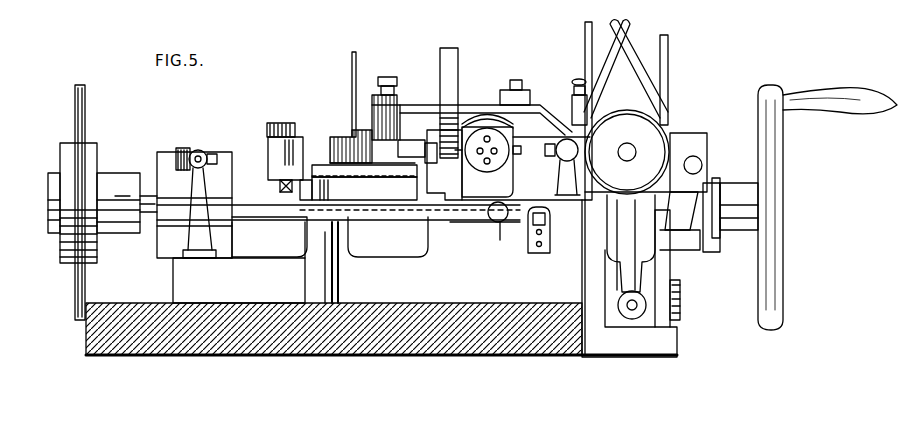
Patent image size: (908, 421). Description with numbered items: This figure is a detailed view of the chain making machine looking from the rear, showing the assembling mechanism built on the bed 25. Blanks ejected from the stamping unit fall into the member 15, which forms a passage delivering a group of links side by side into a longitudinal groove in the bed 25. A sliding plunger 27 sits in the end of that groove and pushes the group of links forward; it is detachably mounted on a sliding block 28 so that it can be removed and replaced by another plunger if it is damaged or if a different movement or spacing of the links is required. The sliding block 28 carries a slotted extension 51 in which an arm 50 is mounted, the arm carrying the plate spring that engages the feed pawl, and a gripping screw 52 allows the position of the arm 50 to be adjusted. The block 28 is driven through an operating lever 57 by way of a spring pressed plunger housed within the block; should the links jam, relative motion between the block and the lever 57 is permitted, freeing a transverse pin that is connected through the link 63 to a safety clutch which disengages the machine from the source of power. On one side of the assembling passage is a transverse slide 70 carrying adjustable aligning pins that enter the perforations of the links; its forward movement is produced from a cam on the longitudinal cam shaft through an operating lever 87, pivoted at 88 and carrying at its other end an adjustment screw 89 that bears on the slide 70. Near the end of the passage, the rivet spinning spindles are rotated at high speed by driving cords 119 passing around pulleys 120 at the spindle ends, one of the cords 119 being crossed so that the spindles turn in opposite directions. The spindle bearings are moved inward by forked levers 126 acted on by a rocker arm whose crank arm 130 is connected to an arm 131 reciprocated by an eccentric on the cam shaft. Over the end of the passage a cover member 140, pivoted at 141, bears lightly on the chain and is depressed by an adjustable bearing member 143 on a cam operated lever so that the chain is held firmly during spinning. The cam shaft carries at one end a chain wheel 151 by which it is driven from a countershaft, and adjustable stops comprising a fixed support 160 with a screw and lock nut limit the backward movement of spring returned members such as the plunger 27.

The passage member 15 is at (450, 58).
The bed 25 is at (444, 165).
The sliding plunger 27 is at (418, 150).
The sliding block 28 is at (352, 160).
The arm 50 is at (473, 108).
The slotted extension 51 is at (394, 118).
The gripping screw 52 is at (387, 77).
The operating lever 57 is at (279, 160).
The link 63 is at (352, 62).
The slide 70 is at (488, 156).
The operating lever 87 is at (276, 212).
The pivot 88 is at (320, 178).
The adjustment screw 89 is at (497, 218).
The driving cords 119 is at (663, 45).
The pulleys 120 is at (626, 107).
The forked levers 126 is at (625, 220).
The crank arm 130 is at (660, 250).
The arm 131 is at (710, 182).
The cover member 140 is at (675, 130).
The pivot 141 is at (698, 163).
The adjustable bearing member 143 is at (577, 85).
The chain wheel 151 is at (77, 118).
The fixed support 160 is at (198, 152).